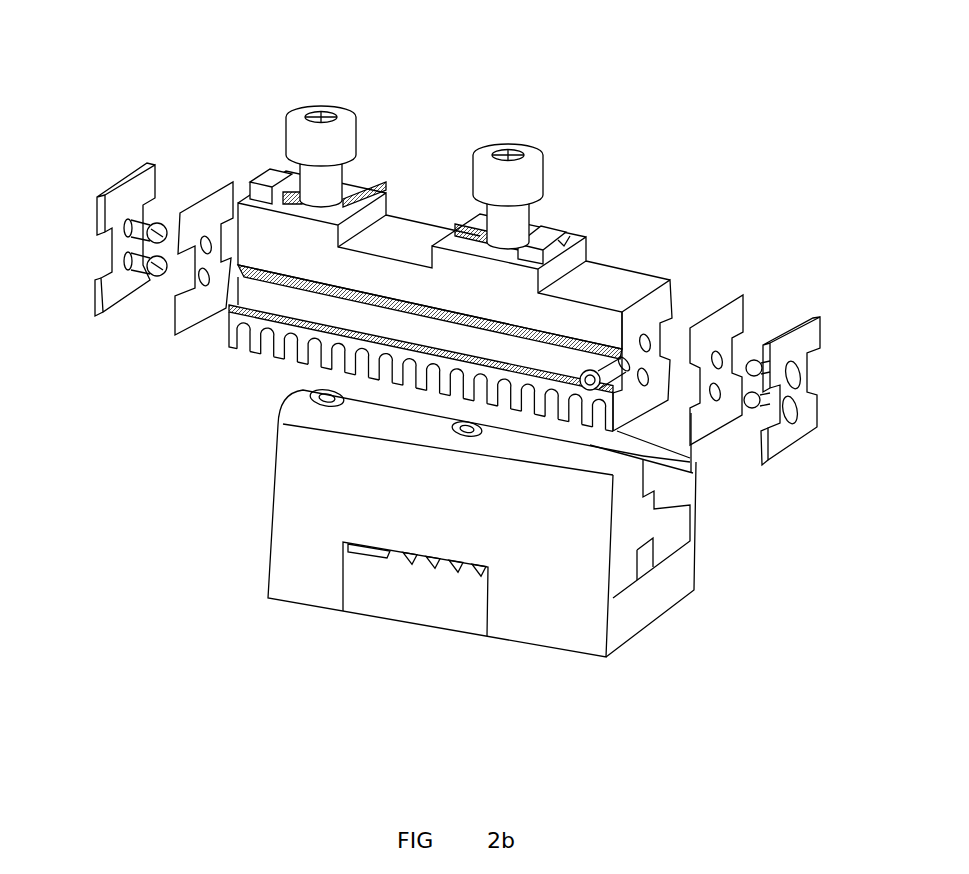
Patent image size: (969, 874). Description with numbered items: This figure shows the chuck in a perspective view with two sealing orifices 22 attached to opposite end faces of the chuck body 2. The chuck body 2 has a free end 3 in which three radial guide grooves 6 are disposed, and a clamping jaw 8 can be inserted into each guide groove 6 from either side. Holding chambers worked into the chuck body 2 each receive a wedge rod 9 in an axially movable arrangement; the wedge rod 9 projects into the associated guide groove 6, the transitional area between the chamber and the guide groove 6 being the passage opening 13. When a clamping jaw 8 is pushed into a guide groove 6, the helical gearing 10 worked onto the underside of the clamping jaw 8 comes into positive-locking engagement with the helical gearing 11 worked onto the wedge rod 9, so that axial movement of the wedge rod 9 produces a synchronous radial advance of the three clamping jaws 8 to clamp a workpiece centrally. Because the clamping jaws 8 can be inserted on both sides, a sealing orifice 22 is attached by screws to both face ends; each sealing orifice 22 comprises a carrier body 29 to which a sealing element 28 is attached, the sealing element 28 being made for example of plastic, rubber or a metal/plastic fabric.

The chuck body 2 is at (272, 516).
The free end 3 is at (343, 432).
The guide groove 6 is at (657, 437).
The clamping jaw 8 is at (427, 222).
The wedge rod 9 is at (477, 582).
The helical gearing 10 is at (237, 347).
The helical gearing 11 is at (433, 567).
The passage opening 13 is at (343, 550).
The sealing orifice 22 is at (118, 308).
The sealing element 28 is at (221, 182).
The carrier body 29 is at (128, 162).